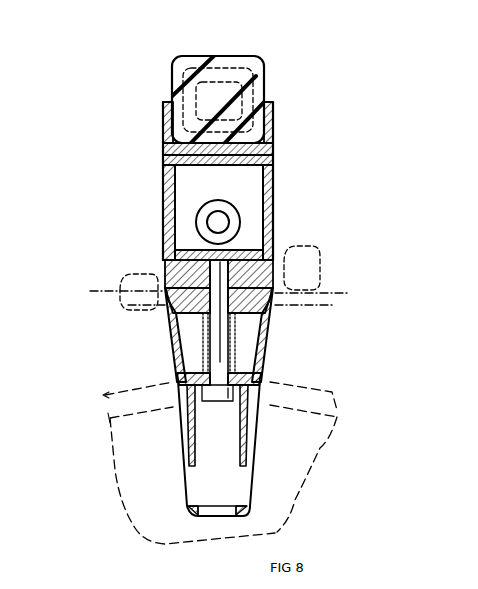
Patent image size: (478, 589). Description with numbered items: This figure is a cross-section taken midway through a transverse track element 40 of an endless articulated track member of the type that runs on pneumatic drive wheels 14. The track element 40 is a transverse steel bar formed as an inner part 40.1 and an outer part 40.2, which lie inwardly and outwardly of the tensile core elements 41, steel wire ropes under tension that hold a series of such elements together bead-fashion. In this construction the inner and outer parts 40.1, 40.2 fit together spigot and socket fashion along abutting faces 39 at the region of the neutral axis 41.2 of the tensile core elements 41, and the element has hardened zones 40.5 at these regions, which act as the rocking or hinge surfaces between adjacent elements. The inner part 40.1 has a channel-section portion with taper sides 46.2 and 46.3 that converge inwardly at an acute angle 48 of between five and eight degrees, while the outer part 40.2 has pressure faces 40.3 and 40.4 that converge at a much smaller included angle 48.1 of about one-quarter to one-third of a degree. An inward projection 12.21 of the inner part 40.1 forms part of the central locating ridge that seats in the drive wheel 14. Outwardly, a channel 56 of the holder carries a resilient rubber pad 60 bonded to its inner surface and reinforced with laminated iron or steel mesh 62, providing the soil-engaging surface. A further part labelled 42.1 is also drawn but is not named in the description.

The resilient pad 60 is at (224, 56).
The laminated iron or steel mesh 62 is at (270, 58).
The channel 56 is at (275, 143).
The pressure face 40.3 is at (275, 172).
The outer part 40.2 is at (283, 205).
The pressure face 40.4 is at (167, 164).
The transverse track element 40 is at (104, 212).
The included angle 48.1 is at (262, 193).
The hardened zones 40.5 is at (154, 283).
The neutral axis 41.2 is at (92, 284).
The tensile core element 41 is at (137, 311).
The abutting faces 39 is at (278, 290).
The taper side 46.2 is at (165, 335).
The taper side 46.3 is at (272, 338).
The center stem 42.1 is at (182, 348).
The inner part 40.1 is at (288, 372).
The acute angle 48 is at (200, 405).
The pneumatic drive wheel 14 is at (322, 445).
The inward projection 12.21 is at (250, 478).